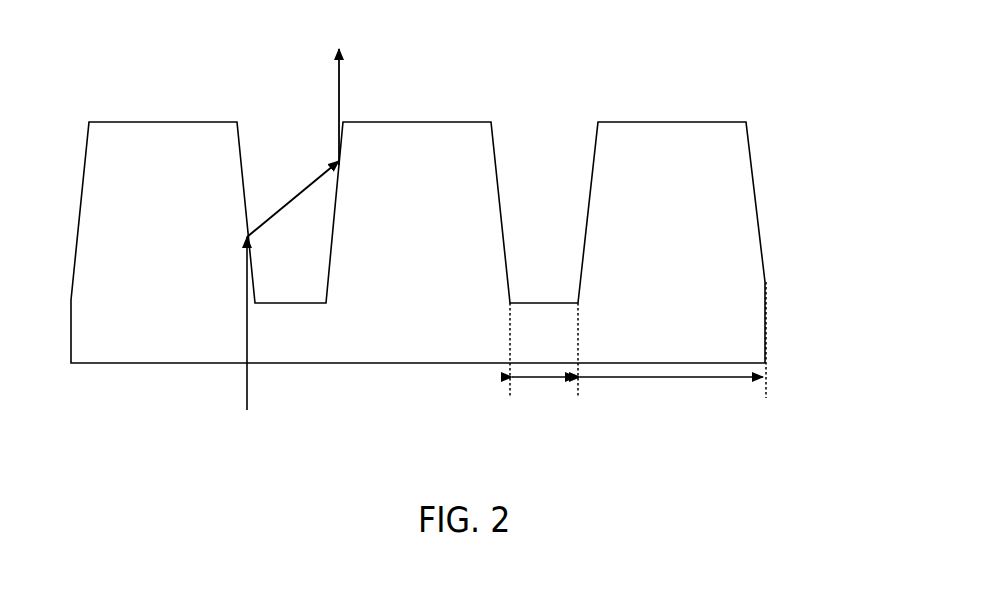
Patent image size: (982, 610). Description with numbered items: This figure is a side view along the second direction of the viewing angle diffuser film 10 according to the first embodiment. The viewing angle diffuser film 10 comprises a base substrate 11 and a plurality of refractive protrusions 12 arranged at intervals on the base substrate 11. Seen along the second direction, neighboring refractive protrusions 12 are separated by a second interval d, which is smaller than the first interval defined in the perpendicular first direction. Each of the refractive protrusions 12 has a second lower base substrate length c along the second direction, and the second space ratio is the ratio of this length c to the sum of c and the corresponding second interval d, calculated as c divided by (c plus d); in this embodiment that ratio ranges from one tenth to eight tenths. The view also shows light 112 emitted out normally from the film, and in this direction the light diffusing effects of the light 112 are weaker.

The viewing angle diffuser film 10 is at (454, 223).
The base substrate 11 is at (667, 352).
The refractive protrusion 12 is at (719, 207).
The light 112 is at (247, 343).